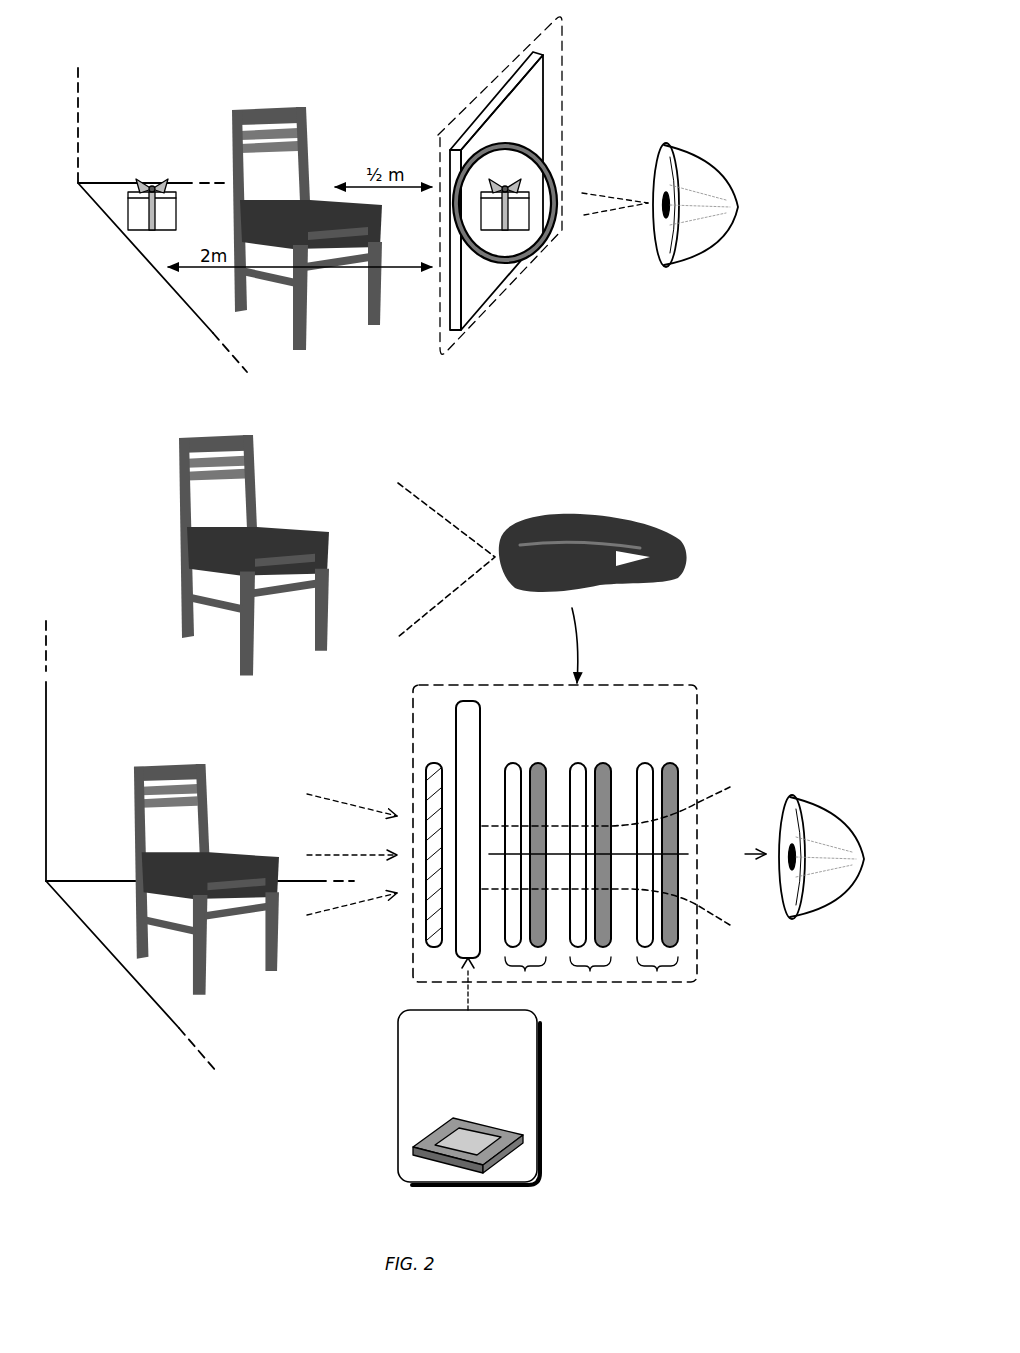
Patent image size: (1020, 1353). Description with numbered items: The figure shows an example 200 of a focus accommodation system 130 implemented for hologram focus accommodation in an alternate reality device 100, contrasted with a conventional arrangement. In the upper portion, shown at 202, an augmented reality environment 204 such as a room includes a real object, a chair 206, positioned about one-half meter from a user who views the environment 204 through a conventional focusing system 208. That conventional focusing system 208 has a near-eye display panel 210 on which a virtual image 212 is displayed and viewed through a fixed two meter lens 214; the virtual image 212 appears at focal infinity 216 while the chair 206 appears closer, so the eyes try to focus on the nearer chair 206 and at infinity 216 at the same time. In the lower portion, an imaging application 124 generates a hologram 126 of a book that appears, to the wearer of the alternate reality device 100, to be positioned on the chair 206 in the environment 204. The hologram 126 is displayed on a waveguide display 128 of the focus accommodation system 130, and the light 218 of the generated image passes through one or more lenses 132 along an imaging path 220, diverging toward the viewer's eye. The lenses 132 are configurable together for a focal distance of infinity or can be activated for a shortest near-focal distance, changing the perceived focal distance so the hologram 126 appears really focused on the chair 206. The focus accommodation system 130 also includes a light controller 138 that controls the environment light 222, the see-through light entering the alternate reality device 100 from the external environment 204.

The alternate reality device 100 is at (618, 518).
The imaging application 124 is at (451, 1106).
The hologram 126 is at (283, 523).
The waveguide display 128 is at (471, 700).
The focus accommodation system 130 is at (623, 685).
The lenses 132 is at (525, 971).
The light controller 138 is at (425, 790).
The example 200 is at (697, 402).
The conventional focusing scenario 202 is at (395, 93).
The augmented reality environment 204 is at (131, 166).
The chair 206 is at (296, 191).
The conventional focusing system 208 is at (497, 302).
The near-eye display panel 210 is at (543, 143).
The virtual image 212 is at (523, 180).
The fixed two meter lens 214 is at (544, 163).
The focal infinity 216 is at (153, 172).
The light of the generated image 218 is at (716, 791).
The imaging path 220 is at (736, 866).
The environment light 222 is at (361, 842).